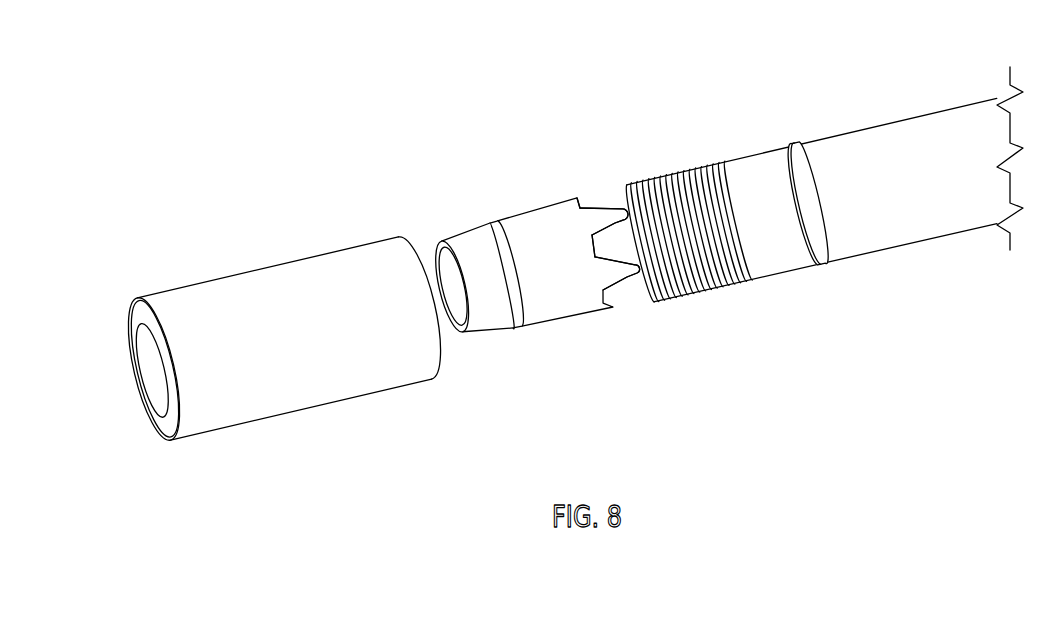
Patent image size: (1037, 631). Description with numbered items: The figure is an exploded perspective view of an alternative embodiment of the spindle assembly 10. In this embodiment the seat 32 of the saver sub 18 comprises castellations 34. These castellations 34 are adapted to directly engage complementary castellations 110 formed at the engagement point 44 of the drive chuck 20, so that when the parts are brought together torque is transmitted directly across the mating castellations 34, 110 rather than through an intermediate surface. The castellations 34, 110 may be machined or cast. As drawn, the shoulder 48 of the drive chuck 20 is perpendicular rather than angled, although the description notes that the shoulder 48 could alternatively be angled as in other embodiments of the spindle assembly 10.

The spindle assembly 10 is at (571, 239).
The saver sub 18 is at (853, 243).
The drive chuck 20 is at (560, 270).
The seat 32 is at (612, 307).
The castellations 34 is at (608, 252).
The engagement point 44 is at (590, 237).
The shoulder 48 is at (518, 332).
The complementary castellations 110 is at (550, 179).